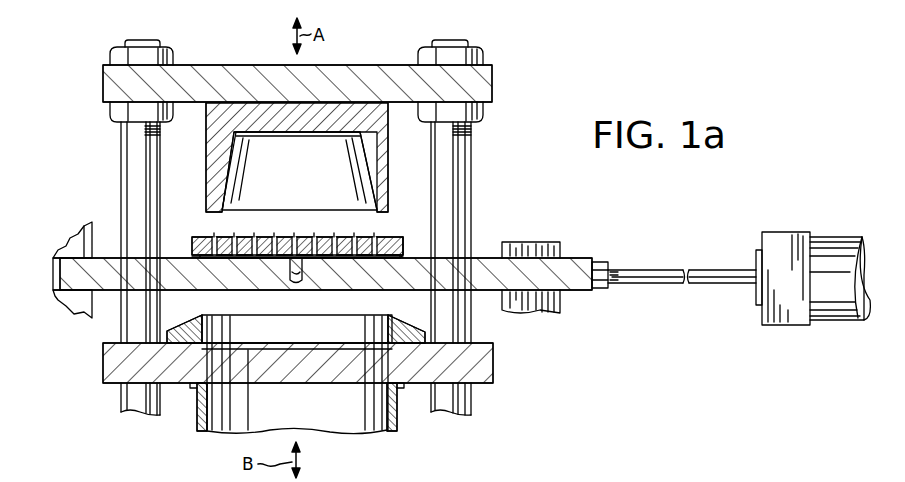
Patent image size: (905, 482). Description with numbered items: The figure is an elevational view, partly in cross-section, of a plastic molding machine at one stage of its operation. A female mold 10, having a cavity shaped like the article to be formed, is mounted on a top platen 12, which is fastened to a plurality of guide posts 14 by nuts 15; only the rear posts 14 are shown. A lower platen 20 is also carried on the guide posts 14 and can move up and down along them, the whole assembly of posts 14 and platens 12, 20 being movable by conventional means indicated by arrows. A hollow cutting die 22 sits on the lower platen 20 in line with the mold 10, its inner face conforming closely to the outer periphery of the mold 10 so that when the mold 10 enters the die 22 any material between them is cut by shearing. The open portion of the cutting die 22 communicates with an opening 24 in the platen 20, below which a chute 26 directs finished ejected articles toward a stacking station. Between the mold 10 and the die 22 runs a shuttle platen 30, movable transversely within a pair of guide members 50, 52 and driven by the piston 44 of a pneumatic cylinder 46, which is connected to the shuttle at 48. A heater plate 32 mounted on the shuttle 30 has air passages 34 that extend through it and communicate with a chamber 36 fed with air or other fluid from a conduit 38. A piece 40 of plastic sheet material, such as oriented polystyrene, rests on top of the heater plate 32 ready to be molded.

The female mold 10 is at (382, 163).
The top platen 12 is at (368, 80).
The guide posts 14 is at (121, 172).
The nuts 15 is at (116, 56).
The lower platen 20 is at (494, 365).
The hollow cutting die 22 is at (410, 330).
The opening 24 is at (307, 370).
The chute 26 is at (365, 418).
The shuttle platen 30 is at (577, 262).
The heater plate 32 is at (404, 240).
The air passages 34 is at (297, 236).
The chamber 36 is at (237, 290).
The conduit 38 is at (300, 284).
The piece of plastic sheet material 40 is at (366, 235).
The piston 44 is at (666, 271).
The pneumatic cylinder 46 is at (838, 240).
The connection 48 is at (600, 290).
The guide member 50 is at (90, 232).
The guide member 52 is at (518, 242).